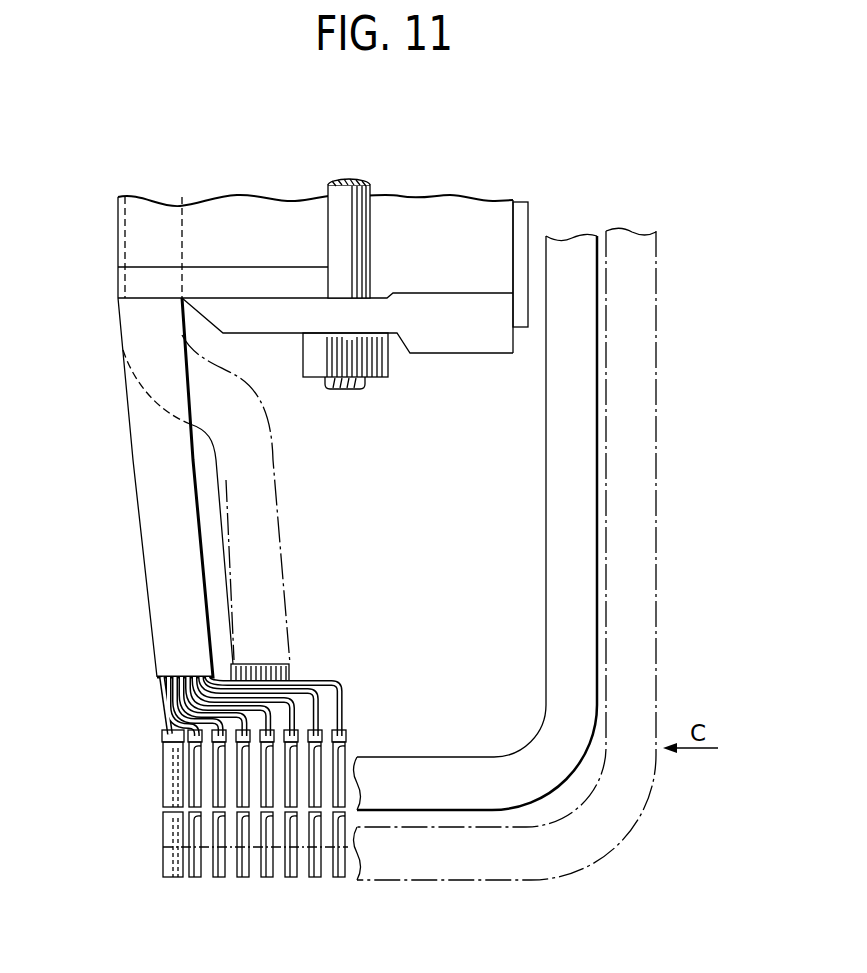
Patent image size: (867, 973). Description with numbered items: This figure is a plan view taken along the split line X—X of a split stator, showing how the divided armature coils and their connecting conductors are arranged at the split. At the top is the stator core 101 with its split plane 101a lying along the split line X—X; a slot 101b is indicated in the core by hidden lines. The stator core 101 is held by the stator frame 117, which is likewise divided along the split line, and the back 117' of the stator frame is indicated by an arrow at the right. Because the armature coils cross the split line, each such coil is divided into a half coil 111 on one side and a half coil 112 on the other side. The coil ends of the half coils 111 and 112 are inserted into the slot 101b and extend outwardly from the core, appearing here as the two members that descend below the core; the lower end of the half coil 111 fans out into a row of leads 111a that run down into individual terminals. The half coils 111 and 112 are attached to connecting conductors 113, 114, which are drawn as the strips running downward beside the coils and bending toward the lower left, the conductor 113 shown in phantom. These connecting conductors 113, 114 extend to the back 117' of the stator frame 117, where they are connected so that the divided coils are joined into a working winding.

The stator core 101 is at (277, 270).
The split plane 101a is at (252, 232).
The slot 101b is at (182, 260).
The half coil 111 is at (133, 473).
The terminal pins / leads 111a is at (170, 746).
The half coil 112 is at (275, 462).
The connecting conductor 113 is at (647, 612).
The connecting conductor 114 is at (546, 570).
The stator frame 117 is at (556, 260).
The back of the stator frame 117' is at (486, 392).